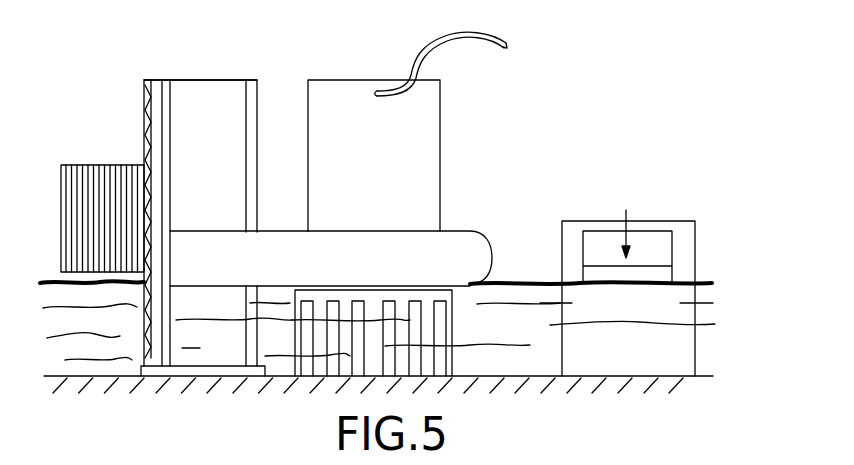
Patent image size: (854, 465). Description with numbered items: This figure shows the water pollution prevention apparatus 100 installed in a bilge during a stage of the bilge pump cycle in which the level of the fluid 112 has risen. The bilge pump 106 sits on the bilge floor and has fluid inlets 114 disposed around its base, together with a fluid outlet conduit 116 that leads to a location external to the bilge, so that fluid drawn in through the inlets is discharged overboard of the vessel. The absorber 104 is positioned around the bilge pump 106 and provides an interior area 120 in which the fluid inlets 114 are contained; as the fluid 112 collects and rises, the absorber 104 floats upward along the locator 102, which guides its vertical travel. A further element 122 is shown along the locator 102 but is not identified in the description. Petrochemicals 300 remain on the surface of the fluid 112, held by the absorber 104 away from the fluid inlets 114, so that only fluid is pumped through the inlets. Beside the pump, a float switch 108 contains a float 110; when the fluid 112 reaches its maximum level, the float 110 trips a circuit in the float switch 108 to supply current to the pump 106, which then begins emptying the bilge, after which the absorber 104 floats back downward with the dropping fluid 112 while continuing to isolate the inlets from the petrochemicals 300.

The water pollution prevention apparatus 100 is at (135, 66).
The locator 102 is at (234, 80).
The absorber 104 is at (470, 230).
The bilge pump 106 is at (441, 93).
The float switch 108 is at (696, 243).
The float 110 is at (652, 272).
The fluid 112 is at (508, 296).
The fluid inlets 114 is at (445, 338).
The fluid outlet conduit 116 is at (57, 164).
The interior area 120 is at (280, 231).
The track 122 is at (146, 118).
The petrochemicals 300 is at (40, 281).